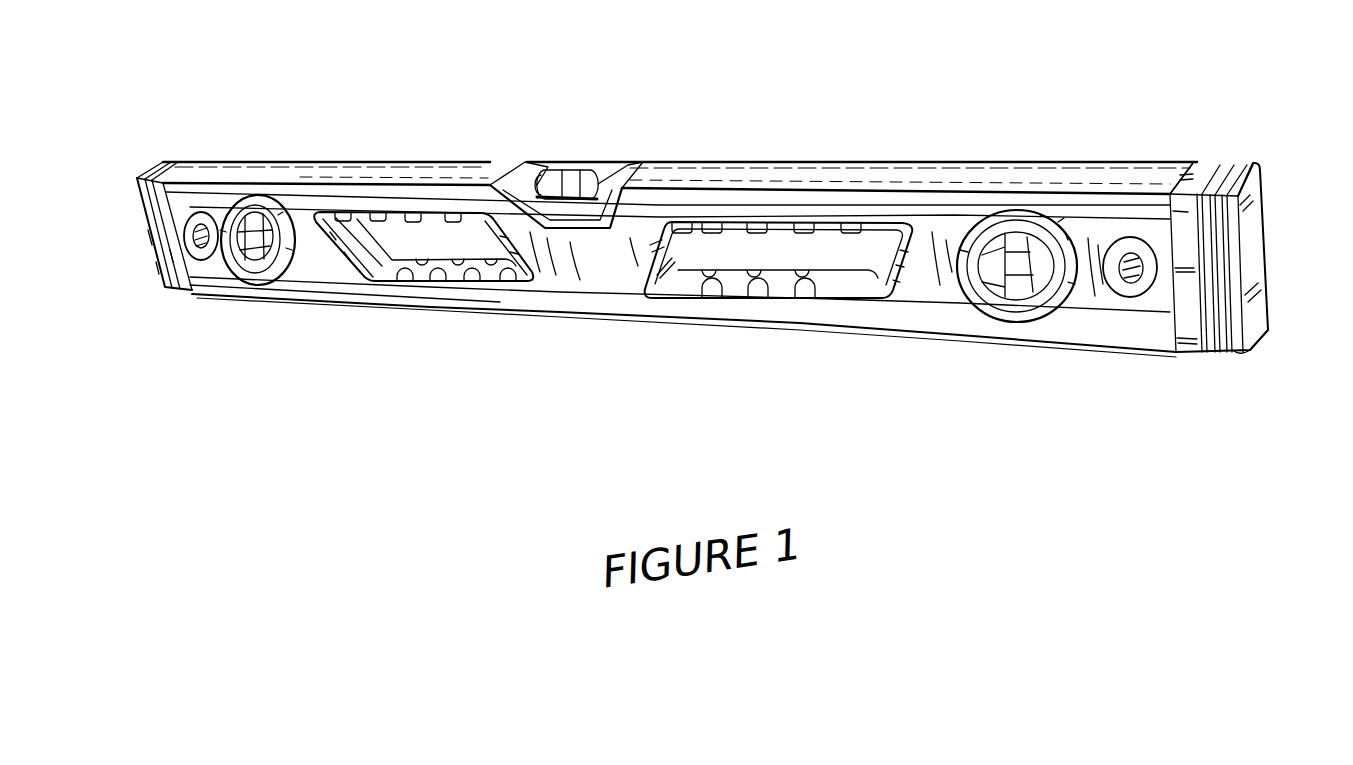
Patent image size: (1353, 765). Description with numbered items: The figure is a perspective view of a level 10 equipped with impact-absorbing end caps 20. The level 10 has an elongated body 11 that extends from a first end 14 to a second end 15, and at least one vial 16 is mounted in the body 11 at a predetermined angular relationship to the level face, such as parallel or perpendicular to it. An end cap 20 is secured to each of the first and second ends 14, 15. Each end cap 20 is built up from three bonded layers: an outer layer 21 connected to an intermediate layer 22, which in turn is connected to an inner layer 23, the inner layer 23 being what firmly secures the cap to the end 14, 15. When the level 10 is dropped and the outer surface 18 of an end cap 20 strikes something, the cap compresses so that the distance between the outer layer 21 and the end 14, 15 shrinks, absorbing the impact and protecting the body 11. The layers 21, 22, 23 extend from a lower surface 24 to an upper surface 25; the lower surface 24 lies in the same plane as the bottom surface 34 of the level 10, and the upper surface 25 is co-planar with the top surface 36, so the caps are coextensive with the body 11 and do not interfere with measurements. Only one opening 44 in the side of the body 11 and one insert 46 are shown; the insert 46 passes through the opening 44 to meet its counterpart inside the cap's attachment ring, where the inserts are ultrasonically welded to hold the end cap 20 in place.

The level 10 is at (380, 168).
The body 11 is at (930, 287).
The first end 14 is at (1190, 163).
The second end 15 is at (192, 160).
The vial 16 is at (577, 180).
The outer surface 18 is at (1257, 240).
The end cap 20 is at (158, 240).
The outer layer 21 is at (1240, 353).
The intermediate layer 22 is at (1220, 357).
The inner layer 23 is at (1190, 347).
The lower surface 24 is at (1253, 347).
The upper surface 25 is at (1240, 165).
The bottom surface 34 is at (583, 318).
The top surface 36 is at (820, 180).
The opening 44 is at (1153, 250).
The insert 46 is at (1117, 282).